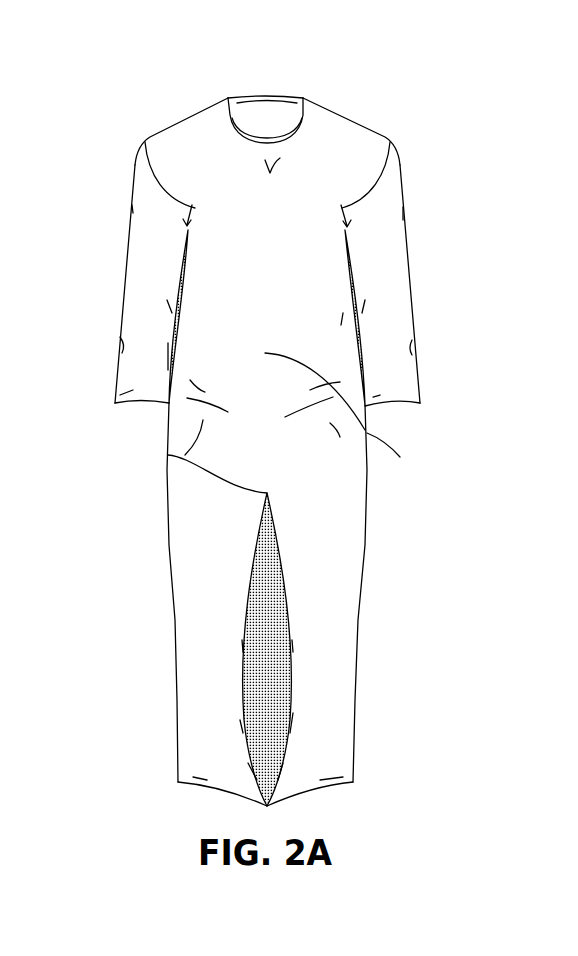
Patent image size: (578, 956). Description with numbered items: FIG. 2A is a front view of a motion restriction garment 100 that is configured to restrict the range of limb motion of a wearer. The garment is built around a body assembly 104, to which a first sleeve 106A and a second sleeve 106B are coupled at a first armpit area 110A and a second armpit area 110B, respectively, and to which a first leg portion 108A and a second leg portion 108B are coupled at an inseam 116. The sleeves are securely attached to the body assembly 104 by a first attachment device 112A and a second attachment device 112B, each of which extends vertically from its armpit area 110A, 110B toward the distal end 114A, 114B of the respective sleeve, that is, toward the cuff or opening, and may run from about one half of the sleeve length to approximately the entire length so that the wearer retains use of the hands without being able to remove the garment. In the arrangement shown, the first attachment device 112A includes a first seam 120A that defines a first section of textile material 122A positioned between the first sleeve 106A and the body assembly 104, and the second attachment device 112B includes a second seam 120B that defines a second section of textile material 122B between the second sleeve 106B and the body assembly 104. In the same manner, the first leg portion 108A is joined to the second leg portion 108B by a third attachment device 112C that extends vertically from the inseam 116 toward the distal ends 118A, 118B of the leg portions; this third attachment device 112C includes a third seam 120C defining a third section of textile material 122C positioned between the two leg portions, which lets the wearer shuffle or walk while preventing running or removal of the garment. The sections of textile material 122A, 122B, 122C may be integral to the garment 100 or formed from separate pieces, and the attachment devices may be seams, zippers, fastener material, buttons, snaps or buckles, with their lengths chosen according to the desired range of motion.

The motion restriction garment 100 is at (378, 92).
The body assembly 104 is at (365, 430).
The first sleeve 106A is at (123, 230).
The second sleeve 106B is at (410, 230).
The first leg portion 108A is at (170, 542).
The second leg portion 108B is at (363, 543).
The first armpit area 110A is at (142, 162).
The second armpit area 110B is at (395, 160).
The first attachment device 112A is at (160, 285).
The second attachment device 112B is at (372, 285).
The third attachment device 112C is at (303, 602).
The distal end of first sleeve 114A is at (140, 402).
The distal end of second sleeve 114B is at (393, 402).
The inseam 116 is at (168, 455).
The distal end of first leg portion 118A is at (220, 783).
The distal end of second leg portion 118B is at (317, 783).
The first seam 120A is at (173, 340).
The second seam 120B is at (362, 342).
The third seam 120C is at (247, 605).
The first section of textile material 122A is at (172, 327).
The second section of textile material 122B is at (360, 327).
The third section of textile material 122C is at (263, 678).